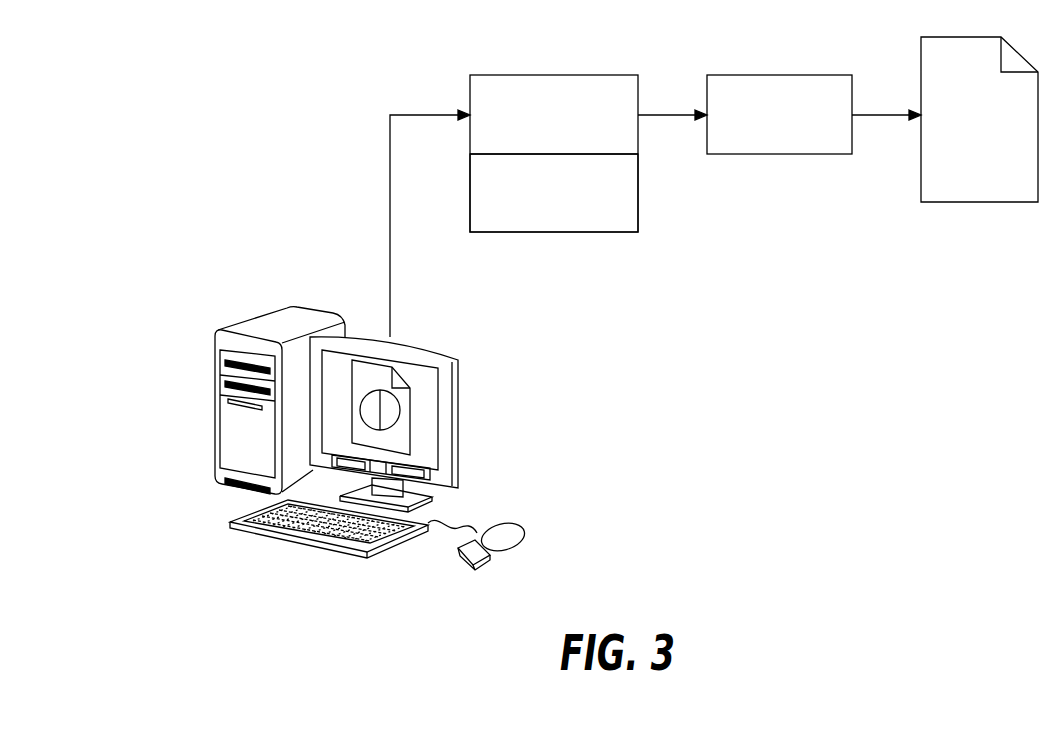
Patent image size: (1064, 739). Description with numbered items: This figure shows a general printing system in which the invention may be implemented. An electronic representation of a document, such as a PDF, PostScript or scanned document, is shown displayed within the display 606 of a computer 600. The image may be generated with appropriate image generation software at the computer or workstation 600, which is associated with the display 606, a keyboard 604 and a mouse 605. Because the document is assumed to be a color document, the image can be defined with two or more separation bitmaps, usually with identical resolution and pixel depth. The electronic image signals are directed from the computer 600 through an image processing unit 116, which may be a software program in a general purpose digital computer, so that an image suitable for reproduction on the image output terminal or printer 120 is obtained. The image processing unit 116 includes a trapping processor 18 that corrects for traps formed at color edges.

The image processing unit 116 is at (537, 75).
The trapping processor 18 is at (590, 232).
The printer 120 is at (777, 75).
The computer 600 is at (247, 320).
The display 606 is at (428, 408).
The keyboard 604 is at (293, 533).
The mouse 605 is at (493, 562).